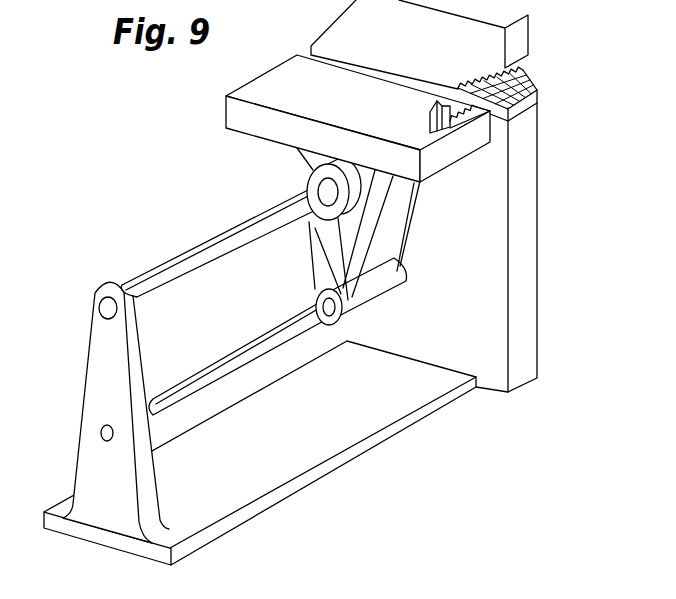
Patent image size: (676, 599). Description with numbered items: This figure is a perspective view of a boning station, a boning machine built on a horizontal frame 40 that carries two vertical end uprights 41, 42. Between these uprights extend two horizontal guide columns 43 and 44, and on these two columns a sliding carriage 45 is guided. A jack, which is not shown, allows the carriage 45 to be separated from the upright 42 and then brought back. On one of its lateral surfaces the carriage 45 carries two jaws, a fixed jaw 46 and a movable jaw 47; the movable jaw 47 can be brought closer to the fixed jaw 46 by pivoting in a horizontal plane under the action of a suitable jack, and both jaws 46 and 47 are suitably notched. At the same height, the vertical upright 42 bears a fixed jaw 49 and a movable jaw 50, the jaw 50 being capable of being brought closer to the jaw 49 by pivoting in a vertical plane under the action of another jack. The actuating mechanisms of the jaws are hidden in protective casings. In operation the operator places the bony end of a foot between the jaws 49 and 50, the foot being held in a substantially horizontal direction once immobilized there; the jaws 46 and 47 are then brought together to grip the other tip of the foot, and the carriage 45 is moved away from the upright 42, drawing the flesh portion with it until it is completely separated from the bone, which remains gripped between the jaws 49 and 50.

The horizontal frame 40 is at (381, 413).
The vertical end upright 41 is at (88, 482).
The vertical end upright 42 is at (494, 294).
The horizontal guide column 43 is at (185, 263).
The horizontal guide column 44 is at (235, 356).
The sliding carriage 45 is at (328, 244).
The fixed jaw 46 is at (457, 138).
The movable jaw 47 is at (432, 118).
The fixed jaw 49 is at (526, 105).
The movable jaw 50 is at (521, 68).